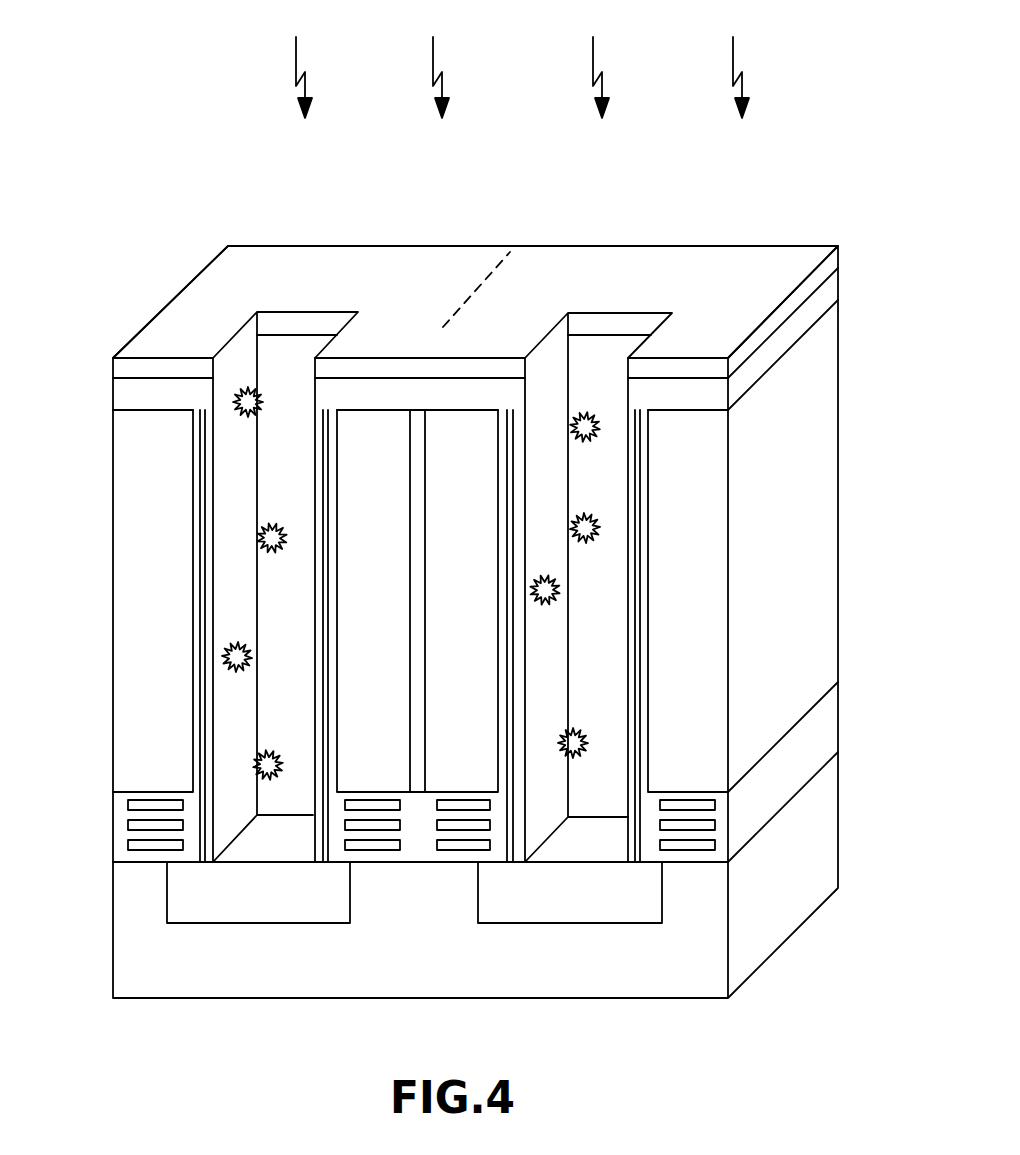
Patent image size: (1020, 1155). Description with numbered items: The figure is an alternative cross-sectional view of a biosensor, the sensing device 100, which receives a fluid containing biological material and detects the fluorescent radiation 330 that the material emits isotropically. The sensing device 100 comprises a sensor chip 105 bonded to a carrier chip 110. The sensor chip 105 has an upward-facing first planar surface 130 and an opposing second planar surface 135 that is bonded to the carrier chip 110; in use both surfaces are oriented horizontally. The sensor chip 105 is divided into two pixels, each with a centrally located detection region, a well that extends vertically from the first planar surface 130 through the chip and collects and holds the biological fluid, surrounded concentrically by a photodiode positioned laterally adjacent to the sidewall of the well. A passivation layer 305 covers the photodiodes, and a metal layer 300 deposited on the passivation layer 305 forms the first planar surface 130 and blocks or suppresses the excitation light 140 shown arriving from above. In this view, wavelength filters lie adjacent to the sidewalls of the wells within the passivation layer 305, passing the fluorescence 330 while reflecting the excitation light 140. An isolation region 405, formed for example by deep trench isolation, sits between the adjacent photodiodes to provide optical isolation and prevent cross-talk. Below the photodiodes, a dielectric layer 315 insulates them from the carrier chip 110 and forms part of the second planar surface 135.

The sensing device 100 is at (110, 180).
The sensor chip 105 is at (852, 246).
The carrier chip 110 is at (852, 888).
The first planar surface 130 is at (251, 258).
The second planar surface 135 is at (136, 878).
The excitation light 140 is at (516, 61).
The metal layer 300 is at (135, 364).
The passivation layer 305 is at (135, 393).
The dielectric layer 315 is at (123, 859).
The fluorescent radiation 330 is at (260, 415).
The isolation region 405 is at (417, 480).